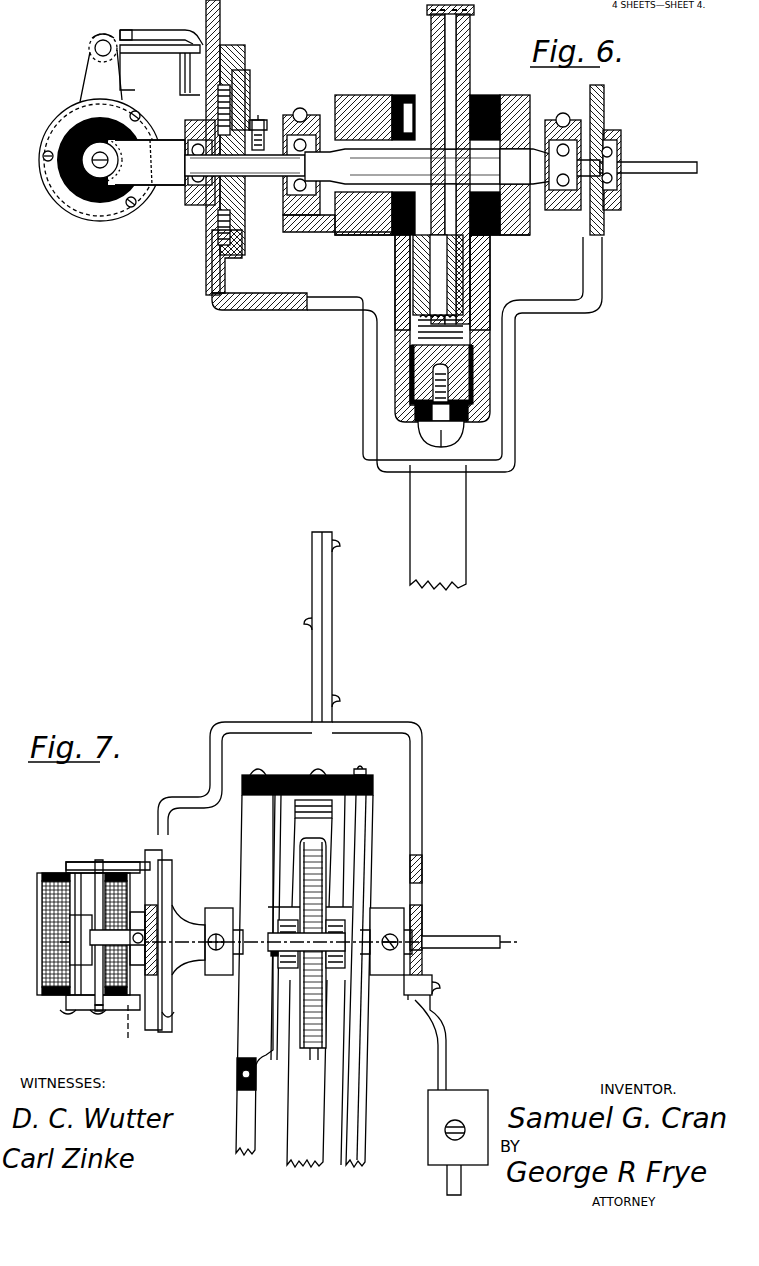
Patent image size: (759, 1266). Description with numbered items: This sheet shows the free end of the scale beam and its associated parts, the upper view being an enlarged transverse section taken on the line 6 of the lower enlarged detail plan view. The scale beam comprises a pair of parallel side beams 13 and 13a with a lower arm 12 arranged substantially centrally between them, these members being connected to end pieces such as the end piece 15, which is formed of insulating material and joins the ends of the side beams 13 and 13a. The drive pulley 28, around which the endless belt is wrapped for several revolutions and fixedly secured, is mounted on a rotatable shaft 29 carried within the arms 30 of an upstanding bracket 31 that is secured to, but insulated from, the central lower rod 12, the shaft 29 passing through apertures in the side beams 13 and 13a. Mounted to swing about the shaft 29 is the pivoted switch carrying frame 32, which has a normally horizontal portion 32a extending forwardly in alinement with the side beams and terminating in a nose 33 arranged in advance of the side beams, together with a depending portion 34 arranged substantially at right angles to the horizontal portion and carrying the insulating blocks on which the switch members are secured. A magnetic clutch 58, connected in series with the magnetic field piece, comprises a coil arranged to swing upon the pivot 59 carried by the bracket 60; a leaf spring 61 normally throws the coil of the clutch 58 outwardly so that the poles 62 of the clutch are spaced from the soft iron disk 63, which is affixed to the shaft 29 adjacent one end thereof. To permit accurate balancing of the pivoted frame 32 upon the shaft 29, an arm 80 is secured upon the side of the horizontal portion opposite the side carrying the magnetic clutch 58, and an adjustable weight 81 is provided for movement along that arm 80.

In FIG. 6, the magnetic clutch 58 is at (85, 205).
In FIG. 7, the magnetic clutch 58 is at (50, 915).
In FIG. 6, the pivot 59 is at (100, 38).
In FIG. 6, the bracket 60 is at (165, 55).
In FIG. 7, the bracket 60 is at (130, 1005).
In FIG. 6, the leaf spring 61 is at (160, 28).
In FIG. 7, the leaf spring 61 is at (118, 930).
In FIG. 6, the poles 62 is at (163, 180).
In FIG. 7, the poles 62 is at (100, 860).
In FIG. 6, the soft iron disk 63 is at (236, 60).
In FIG. 7, the soft iron disk 63 is at (174, 870).
In FIG. 6, the side beam 13 is at (360, 95).
In FIG. 7, the side beam 13 is at (242, 1022).
In FIG. 6, the side beam 13a is at (510, 95).
In FIG. 7, the side beam 13a is at (365, 1038).
In FIG. 6, the end piece 15 is at (405, 95).
In FIG. 7, the end piece 15 is at (283, 773).
In FIG. 6, the drive pulley 28 is at (472, 30).
In FIG. 7, the drive pulley 28 is at (288, 1032).
In FIG. 6, the rotatable shaft 29 is at (337, 150).
In FIG. 6, the arms 30 is at (488, 285).
In FIG. 6, the lower arm 12 is at (455, 360).
In FIG. 7, the lower arm 12 is at (310, 981).
In FIG. 6, the upstanding bracket 31 is at (398, 425).
In FIG. 6, the depending portion 34 is at (460, 530).
In FIG. 7, the nose 33 is at (326, 655).
In FIG. 7, the pivoted switch carrying frame 32 is at (235, 778).
In FIG. 7, the horizontal portion 32a is at (424, 780).
In FIG. 7, the section line 6 is at (300, 994).
In FIG. 7, the arm 80 is at (450, 1035).
In FIG. 7, the adjustable weight 81 is at (486, 1095).